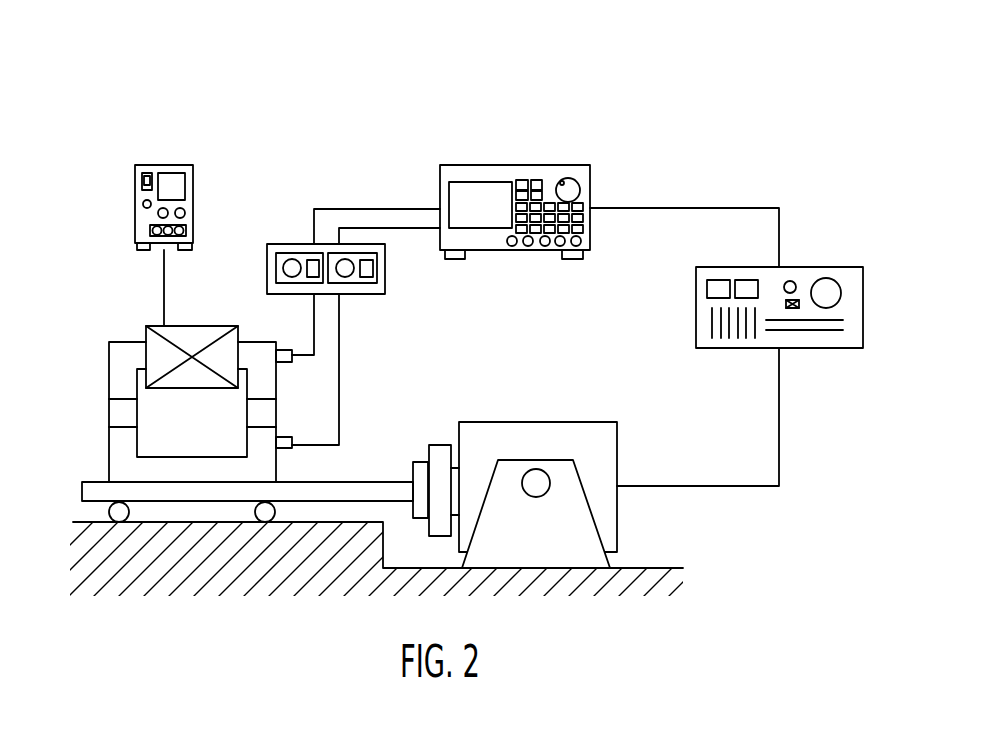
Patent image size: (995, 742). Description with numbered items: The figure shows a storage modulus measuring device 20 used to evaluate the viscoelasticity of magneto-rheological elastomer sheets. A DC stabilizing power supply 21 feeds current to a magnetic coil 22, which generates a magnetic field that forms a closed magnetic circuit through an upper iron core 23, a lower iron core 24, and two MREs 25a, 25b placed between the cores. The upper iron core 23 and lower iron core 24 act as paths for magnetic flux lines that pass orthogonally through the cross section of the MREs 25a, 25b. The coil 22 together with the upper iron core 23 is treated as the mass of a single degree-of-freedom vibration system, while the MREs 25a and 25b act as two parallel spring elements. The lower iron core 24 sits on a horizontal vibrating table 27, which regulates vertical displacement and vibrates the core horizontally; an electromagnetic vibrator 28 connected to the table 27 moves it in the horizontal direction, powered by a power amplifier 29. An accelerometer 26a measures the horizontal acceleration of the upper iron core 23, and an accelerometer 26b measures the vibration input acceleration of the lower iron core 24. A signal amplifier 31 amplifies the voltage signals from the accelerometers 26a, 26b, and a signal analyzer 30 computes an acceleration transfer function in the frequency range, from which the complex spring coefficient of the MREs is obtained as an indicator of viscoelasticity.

The storage modulus measuring device 20 is at (180, 98).
The DC stabilizing power supply 21 is at (152, 165).
The magnetic coil 22 is at (190, 334).
The upper iron core 23 is at (117, 372).
The lower iron core 24 is at (117, 460).
The MRE 25a is at (117, 415).
The MRE 25b is at (266, 412).
The accelerometer 26a is at (284, 349).
The accelerometer 26b is at (284, 451).
The horizontal vibrating table 27 is at (97, 493).
The electromagnetic vibrator 28 is at (583, 422).
The power amplifier 29 is at (824, 266).
The signal analyzer 30 is at (557, 165).
The signal amplifier 31 is at (388, 268).